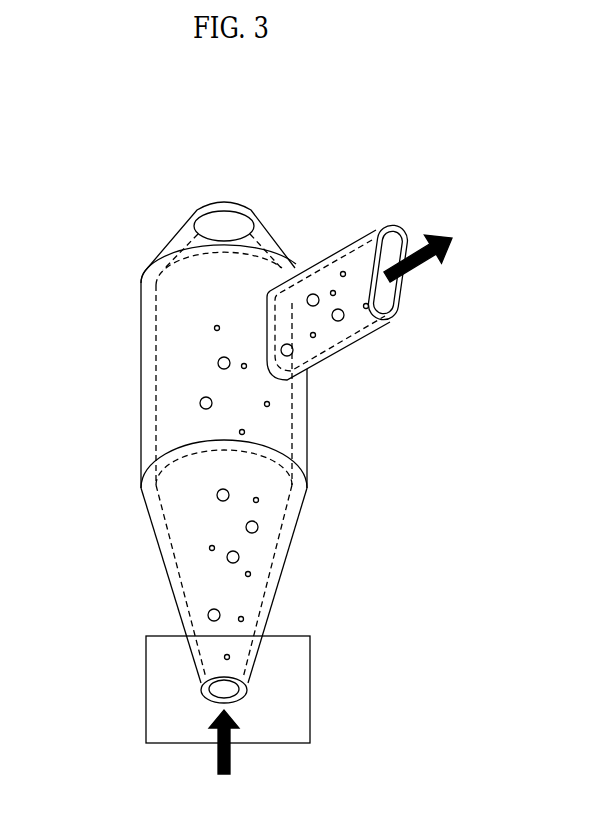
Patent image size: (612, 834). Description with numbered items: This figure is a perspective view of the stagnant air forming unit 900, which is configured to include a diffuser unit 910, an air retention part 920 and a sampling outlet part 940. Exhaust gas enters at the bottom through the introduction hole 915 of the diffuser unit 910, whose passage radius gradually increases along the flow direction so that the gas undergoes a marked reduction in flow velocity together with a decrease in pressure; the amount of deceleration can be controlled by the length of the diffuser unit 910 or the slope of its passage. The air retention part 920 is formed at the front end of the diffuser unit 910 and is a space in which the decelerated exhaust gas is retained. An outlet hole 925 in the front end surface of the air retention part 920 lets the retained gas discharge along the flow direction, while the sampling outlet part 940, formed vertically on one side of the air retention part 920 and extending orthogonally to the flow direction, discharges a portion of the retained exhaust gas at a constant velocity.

The stagnant air forming unit 900 is at (69, 158).
The diffuser unit 910 is at (263, 561).
The introduction hole 915 is at (218, 689).
The air retention part 920 is at (166, 354).
The outlet hole 925 is at (228, 226).
The sampling outlet part 940 is at (353, 325).